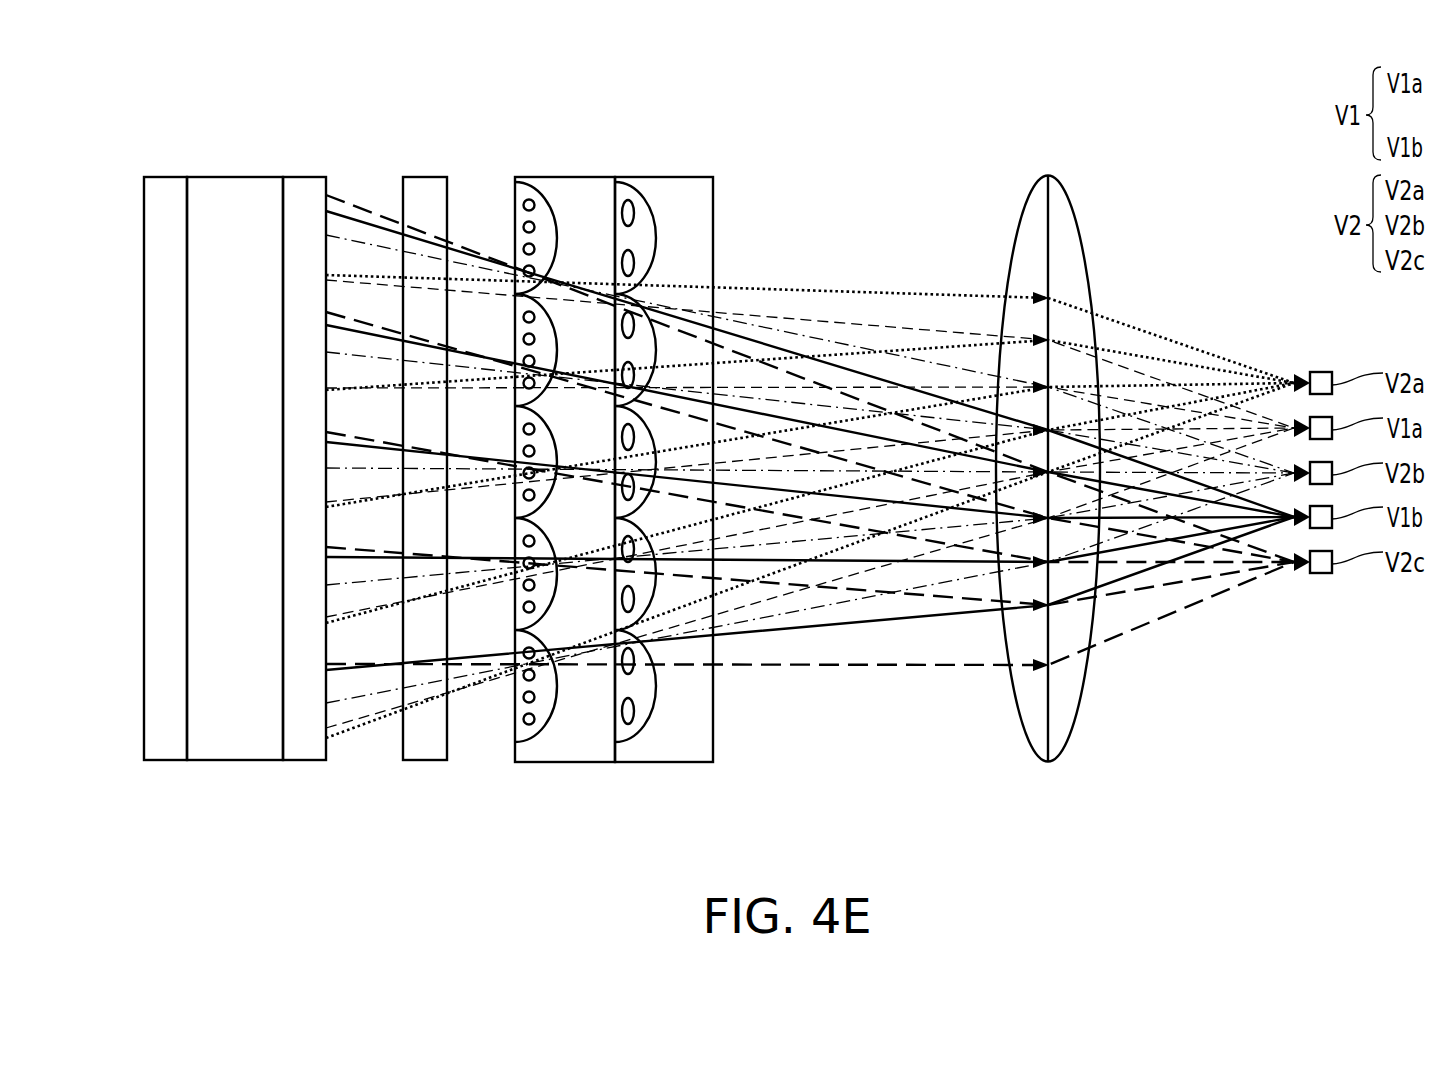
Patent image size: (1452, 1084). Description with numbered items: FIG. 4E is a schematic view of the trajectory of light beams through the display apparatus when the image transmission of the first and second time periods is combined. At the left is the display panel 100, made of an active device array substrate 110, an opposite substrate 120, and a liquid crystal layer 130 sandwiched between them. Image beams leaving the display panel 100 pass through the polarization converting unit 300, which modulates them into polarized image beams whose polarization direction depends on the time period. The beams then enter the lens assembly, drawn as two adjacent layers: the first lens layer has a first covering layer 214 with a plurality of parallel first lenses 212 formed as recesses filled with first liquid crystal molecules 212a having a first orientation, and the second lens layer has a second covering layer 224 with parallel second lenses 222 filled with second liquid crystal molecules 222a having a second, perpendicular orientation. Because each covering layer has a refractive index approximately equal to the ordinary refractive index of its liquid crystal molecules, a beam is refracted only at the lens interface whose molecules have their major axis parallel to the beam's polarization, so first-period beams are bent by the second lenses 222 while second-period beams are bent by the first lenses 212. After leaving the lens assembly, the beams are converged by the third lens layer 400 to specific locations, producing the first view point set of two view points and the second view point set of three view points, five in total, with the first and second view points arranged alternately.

The display panel 100 is at (235, 469).
The active device array substrate 110 is at (164, 196).
The liquid crystal layer 130 is at (236, 196).
The opposite substrate 120 is at (302, 196).
The polarization converting unit 300 is at (424, 196).
The first lenses 212 is at (548, 476).
The first liquid crystal molecules 212a is at (534, 206).
The first covering layer 214 is at (580, 722).
The second lenses 222 is at (646, 476).
The second liquid crystal molecules 222a is at (630, 210).
The second covering layer 224 is at (685, 722).
The third lens layer 400 is at (1064, 218).